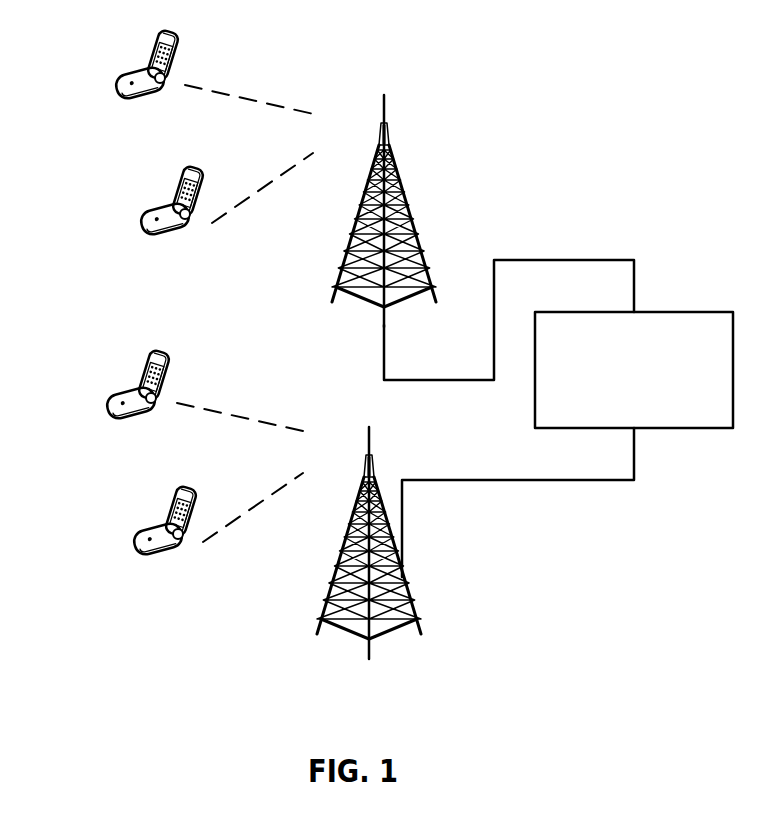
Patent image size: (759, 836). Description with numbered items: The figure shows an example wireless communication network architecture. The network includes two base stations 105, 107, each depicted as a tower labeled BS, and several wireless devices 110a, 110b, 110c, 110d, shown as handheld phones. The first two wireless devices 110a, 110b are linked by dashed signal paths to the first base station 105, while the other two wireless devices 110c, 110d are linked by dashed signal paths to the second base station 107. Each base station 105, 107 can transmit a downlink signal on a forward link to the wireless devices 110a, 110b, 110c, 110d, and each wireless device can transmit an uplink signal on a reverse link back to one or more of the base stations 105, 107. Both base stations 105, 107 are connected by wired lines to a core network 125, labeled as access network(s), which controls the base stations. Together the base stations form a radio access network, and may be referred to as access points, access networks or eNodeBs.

The wireless device 110a is at (133, 38).
The wireless device 110b is at (158, 175).
The wireless device 110c is at (122, 358).
The wireless device 110d is at (150, 497).
The base station 105 is at (398, 173).
The base station 107 is at (372, 463).
The core network 125 is at (552, 311).